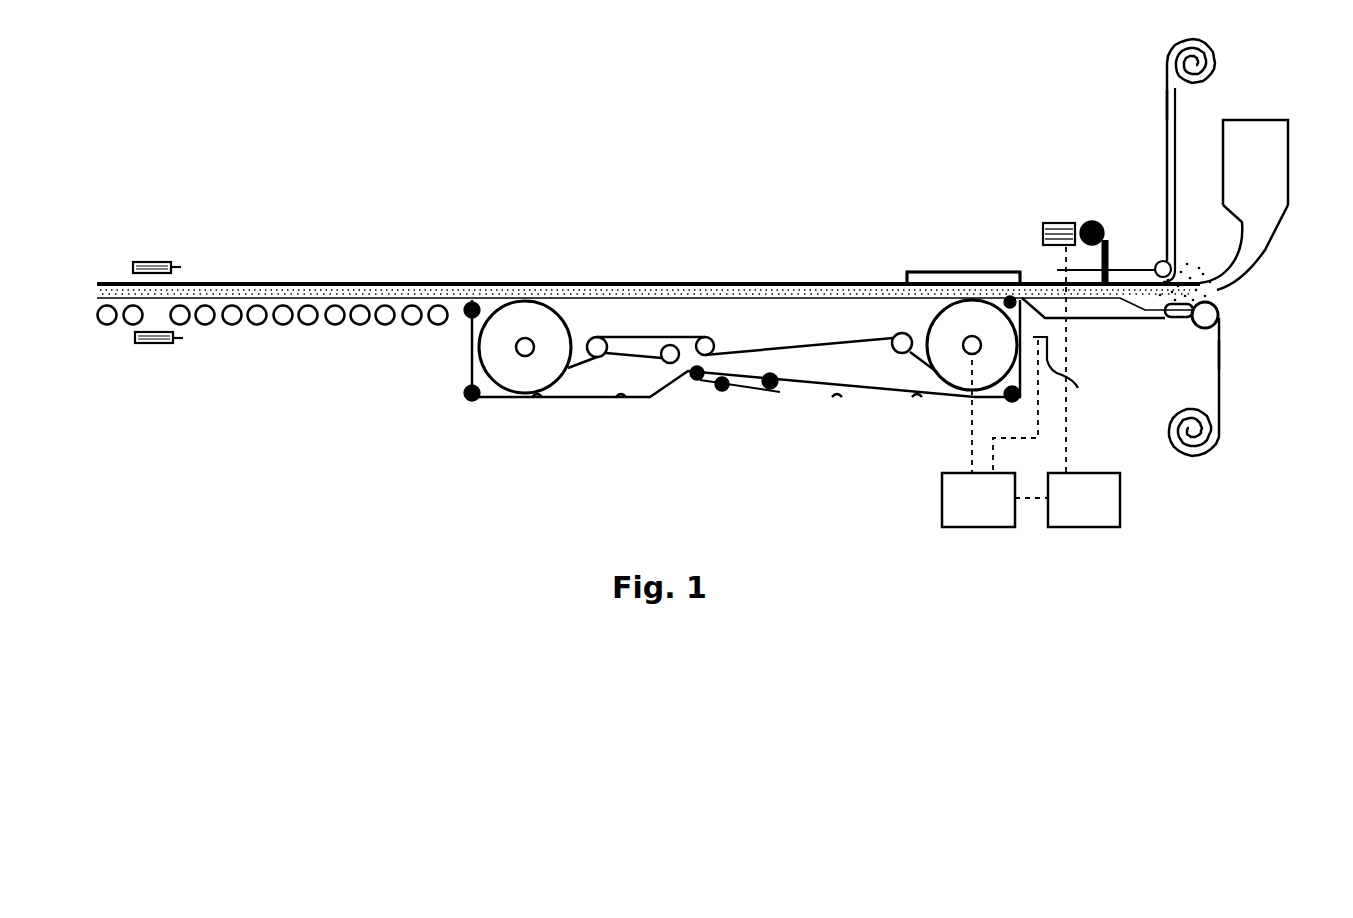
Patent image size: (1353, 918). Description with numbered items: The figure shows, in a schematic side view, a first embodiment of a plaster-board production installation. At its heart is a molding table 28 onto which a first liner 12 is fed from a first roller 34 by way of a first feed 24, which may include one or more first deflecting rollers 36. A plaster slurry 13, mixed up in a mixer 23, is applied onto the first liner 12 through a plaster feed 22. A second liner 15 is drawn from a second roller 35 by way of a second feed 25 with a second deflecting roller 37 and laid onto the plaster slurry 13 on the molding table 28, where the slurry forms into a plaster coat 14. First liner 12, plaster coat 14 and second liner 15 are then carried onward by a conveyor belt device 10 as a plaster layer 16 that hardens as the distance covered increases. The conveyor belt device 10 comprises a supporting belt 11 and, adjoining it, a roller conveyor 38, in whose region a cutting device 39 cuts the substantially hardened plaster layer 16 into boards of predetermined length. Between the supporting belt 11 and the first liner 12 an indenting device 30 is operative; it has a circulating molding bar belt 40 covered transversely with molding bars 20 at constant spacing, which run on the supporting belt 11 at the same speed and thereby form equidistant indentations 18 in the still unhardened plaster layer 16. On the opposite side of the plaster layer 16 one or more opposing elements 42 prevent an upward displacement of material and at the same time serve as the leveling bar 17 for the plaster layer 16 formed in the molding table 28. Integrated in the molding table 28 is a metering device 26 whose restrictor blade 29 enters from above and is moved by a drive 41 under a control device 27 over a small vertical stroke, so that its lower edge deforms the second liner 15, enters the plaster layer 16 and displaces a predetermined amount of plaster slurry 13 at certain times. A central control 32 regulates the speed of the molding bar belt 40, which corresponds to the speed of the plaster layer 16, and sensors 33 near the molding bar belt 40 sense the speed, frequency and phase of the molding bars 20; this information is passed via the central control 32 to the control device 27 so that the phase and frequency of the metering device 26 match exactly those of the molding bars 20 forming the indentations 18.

The conveyor belt device 10 is at (668, 330).
The supporting belt 11 is at (758, 304).
The first liner 12 is at (1230, 323).
The plaster slurry 13 is at (1187, 282).
The plaster coat 14 is at (1175, 322).
The second liner 15 is at (1165, 153).
The plaster layer 16 is at (853, 266).
The doctor blade 17 is at (915, 270).
The indentations 18 is at (466, 298).
The molding bars 20 is at (922, 405).
The plaster feed 22 is at (1247, 249).
The mixer 23 is at (1272, 150).
The first feed 24 is at (1248, 354).
The second feed 25 is at (1150, 105).
The metering device 26 is at (1066, 210).
The control device 27 is at (1079, 530).
The molding table 28 is at (1118, 320).
The restrictor blade 29 is at (1142, 256).
The indenting device 30 is at (456, 410).
The central control 32 is at (975, 530).
The sensors 33 is at (1072, 377).
The first roller 34 is at (1208, 453).
The second roller 35 is at (1216, 62).
The first deflecting rollers 36 is at (1221, 305).
The second deflecting roller 37 is at (1162, 265).
The roller conveyor 38 is at (233, 326).
The cutting device 39 is at (152, 262).
The molding bar belt 40 is at (585, 410).
The drive 41 is at (1058, 223).
The opposing elements 42 is at (915, 270).